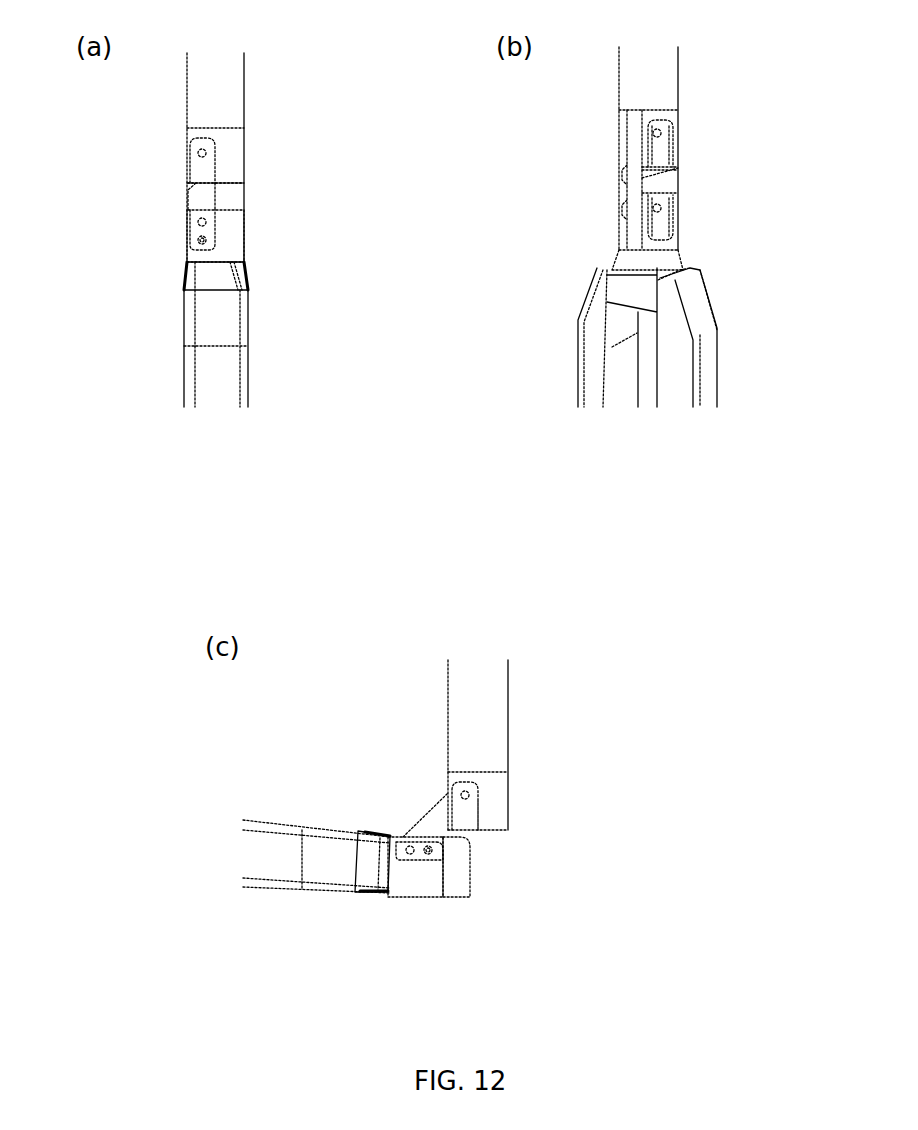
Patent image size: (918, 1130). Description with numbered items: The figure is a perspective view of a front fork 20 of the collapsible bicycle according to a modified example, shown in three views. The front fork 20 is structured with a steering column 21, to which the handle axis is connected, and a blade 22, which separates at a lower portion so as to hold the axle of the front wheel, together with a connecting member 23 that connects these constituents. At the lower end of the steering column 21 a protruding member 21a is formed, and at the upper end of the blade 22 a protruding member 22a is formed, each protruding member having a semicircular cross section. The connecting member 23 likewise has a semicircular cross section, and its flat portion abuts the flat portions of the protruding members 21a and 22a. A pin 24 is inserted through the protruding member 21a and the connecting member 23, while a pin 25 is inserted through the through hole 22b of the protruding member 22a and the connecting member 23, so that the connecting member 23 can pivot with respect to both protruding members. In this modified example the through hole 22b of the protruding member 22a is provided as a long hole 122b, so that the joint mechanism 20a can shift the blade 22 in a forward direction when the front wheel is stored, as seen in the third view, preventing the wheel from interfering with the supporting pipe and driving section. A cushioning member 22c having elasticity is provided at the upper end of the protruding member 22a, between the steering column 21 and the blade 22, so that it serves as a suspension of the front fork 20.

The front fork 20 is at (334, 367).
The joint mechanism 20a is at (96, 292).
The steering column 21 is at (241, 90).
The protruding member 21a is at (240, 170).
The blade 22 is at (240, 305).
The protruding member 22a is at (236, 230).
The through hole 22b is at (510, 867).
The cushioning member 22c is at (236, 198).
The connecting member 23 is at (633, 176).
The pin 24 is at (198, 153).
The pin 25 is at (198, 228).
The long hole 122b is at (196, 243).